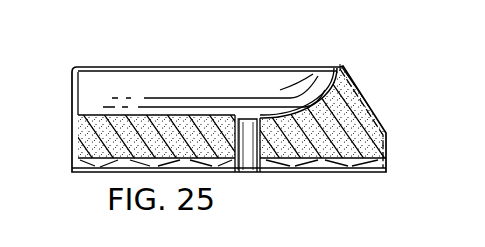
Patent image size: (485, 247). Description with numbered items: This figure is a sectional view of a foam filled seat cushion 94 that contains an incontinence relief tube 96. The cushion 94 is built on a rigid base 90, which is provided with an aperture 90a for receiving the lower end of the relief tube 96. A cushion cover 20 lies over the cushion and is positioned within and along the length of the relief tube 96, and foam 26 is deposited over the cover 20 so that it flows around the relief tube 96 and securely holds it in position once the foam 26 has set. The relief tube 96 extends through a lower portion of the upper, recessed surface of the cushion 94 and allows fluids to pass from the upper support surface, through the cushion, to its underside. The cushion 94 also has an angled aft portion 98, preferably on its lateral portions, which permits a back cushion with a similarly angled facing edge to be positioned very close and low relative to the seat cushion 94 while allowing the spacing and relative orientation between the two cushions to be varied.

The cushion cover 20 is at (133, 115).
The foam 26 is at (75, 132).
The base 90 is at (92, 167).
The aperture 90a is at (250, 165).
The cushion 94 is at (350, 55).
The incontinence relief tube 96 is at (246, 122).
The angled aft portion 98 is at (366, 101).